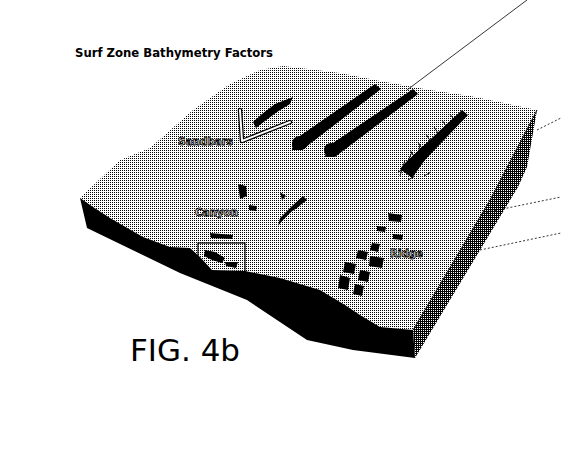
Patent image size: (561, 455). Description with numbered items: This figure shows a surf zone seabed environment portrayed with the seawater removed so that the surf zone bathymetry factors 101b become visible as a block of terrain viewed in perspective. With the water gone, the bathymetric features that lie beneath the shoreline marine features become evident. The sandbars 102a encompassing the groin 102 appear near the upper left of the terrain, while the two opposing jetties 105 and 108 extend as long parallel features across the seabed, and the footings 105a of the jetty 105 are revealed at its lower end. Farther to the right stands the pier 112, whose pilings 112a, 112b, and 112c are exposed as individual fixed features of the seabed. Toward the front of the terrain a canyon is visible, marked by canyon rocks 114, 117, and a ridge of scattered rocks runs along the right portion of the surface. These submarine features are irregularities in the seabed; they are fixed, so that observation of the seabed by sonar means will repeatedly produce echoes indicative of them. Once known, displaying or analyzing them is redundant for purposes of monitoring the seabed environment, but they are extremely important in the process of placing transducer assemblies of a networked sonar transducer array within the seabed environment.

The surf zone bathymetry factors 101b is at (289, 63).
The groin 102 is at (262, 112).
The sandbars 102a is at (240, 113).
The jetty 105 is at (377, 86).
The footings 105a is at (296, 152).
The jetty 108 is at (412, 91).
The pier 112 is at (467, 112).
The piling 112a is at (428, 175).
The piling 112b is at (418, 175).
The piling 112c is at (403, 170).
The canyon rocks 114 is at (212, 248).
The canyon rocks 117 is at (225, 258).